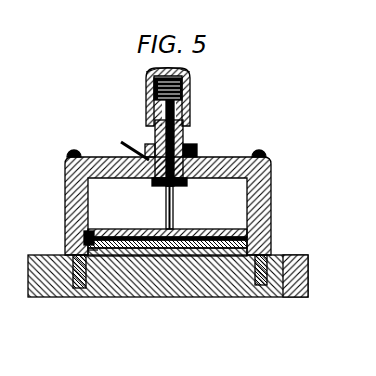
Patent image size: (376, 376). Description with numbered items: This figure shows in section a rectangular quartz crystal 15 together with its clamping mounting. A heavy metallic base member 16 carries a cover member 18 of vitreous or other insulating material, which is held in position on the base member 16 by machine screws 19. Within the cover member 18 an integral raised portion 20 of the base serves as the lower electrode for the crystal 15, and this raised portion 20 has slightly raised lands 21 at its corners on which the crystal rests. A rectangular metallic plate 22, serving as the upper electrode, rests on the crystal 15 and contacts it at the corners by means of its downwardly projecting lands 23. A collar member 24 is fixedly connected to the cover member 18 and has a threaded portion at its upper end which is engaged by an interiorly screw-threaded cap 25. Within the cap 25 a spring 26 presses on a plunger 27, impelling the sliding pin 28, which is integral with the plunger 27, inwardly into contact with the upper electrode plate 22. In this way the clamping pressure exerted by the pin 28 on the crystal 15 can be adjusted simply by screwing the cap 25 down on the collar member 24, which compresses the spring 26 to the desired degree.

The rectangular quartz crystal 15 is at (204, 239).
The base member 16 is at (308, 271).
The cover member 18 is at (272, 203).
The machine screws 19 is at (75, 151).
The raised portion 20 is at (140, 249).
The lands 21 is at (99, 252).
The metallic plate 22 is at (104, 230).
The downwardly projecting lands 23 is at (85, 239).
The collar member 24 is at (184, 136).
The cap 25 is at (190, 86).
The spring 26 is at (147, 90).
The plunger 27 is at (190, 103).
The sliding pin 28 is at (174, 192).